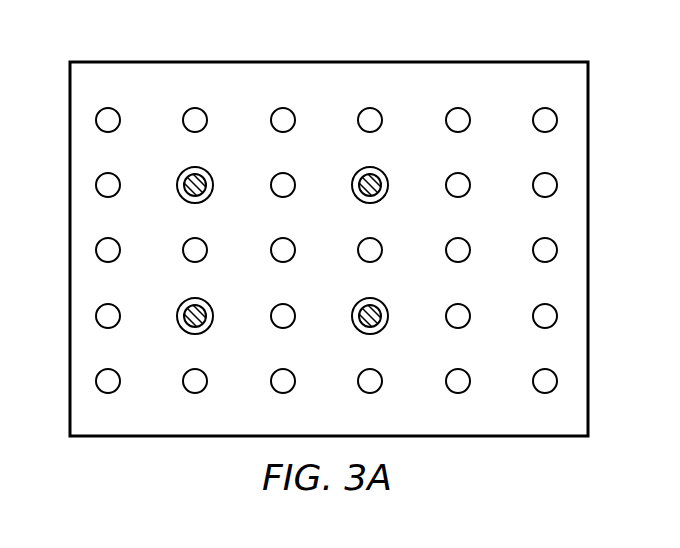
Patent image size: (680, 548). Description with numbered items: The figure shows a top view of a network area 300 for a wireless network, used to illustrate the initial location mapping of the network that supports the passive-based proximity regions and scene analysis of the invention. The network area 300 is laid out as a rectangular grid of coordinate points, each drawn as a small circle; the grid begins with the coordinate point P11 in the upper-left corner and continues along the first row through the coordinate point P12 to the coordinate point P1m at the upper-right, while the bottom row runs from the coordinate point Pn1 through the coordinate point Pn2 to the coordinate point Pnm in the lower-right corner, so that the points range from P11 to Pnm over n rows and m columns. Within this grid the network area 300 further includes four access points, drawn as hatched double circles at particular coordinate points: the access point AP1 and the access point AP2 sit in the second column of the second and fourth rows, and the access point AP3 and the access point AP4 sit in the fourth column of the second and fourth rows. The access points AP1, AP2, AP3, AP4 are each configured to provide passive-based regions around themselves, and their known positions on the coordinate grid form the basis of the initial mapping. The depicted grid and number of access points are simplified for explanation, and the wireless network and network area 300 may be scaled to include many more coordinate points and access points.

The network area 300 is at (589, 100).
The coordinate point P11 is at (107, 111).
The coordinate point P12 is at (194, 111).
The coordinate point P1m is at (543, 111).
The coordinate point Pn1 is at (107, 393).
The coordinate point Pn2 is at (194, 393).
The coordinate point Pnm is at (543, 393).
The access point AP1 is at (180, 179).
The access point AP2 is at (180, 310).
The access point AP3 is at (382, 178).
The access point AP4 is at (382, 309).